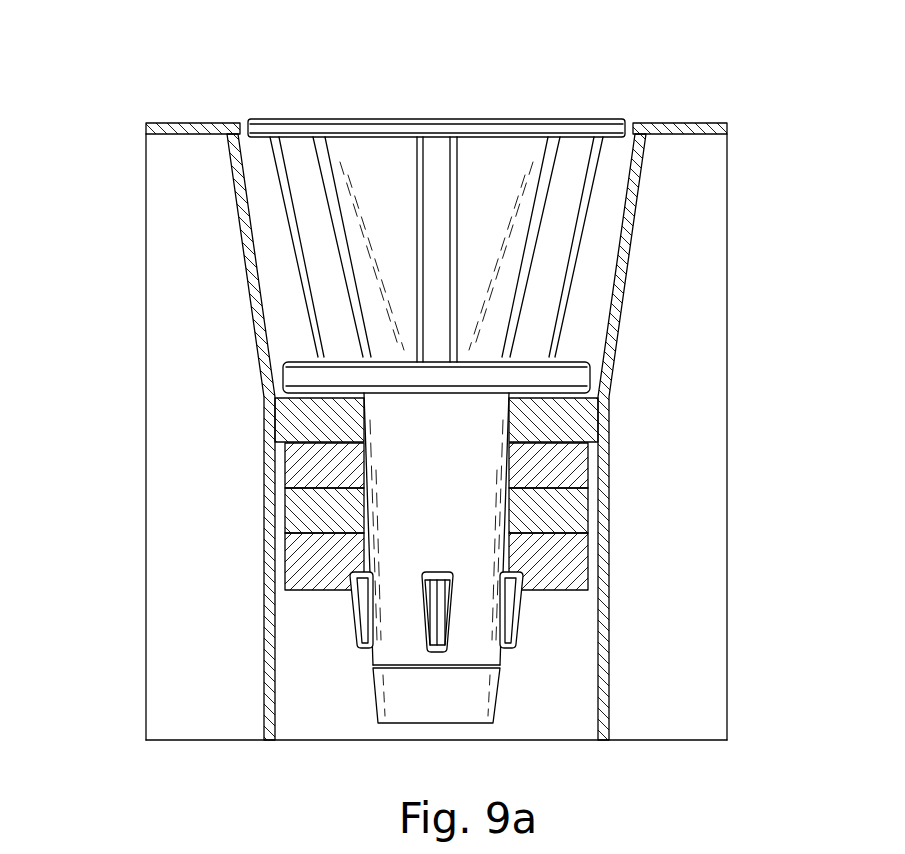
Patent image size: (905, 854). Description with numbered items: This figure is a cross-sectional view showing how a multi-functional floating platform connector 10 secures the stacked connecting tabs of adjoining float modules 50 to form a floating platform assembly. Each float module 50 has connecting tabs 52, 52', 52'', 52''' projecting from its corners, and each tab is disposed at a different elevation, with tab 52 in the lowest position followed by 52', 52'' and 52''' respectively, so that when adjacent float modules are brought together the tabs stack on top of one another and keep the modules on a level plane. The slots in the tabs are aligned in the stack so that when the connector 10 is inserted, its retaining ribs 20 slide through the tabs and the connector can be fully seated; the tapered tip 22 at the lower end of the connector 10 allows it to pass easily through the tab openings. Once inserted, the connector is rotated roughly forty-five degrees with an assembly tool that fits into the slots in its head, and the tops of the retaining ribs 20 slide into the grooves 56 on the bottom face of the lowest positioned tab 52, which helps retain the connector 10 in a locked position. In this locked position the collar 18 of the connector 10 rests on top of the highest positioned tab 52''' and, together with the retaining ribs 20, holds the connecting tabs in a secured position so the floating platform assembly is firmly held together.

The multi-functional floating platform connector 10 is at (166, 112).
The float module 50 is at (172, 246).
The collar 18 is at (580, 360).
The connecting tab 52''' is at (320, 412).
The connecting tab 52'' is at (320, 464).
The connecting tab 52' is at (331, 517).
The connecting tab 52 is at (340, 574).
The retaining ribs 20 is at (355, 633).
The grooves 56 is at (527, 575).
The tapered tip 22 is at (495, 695).